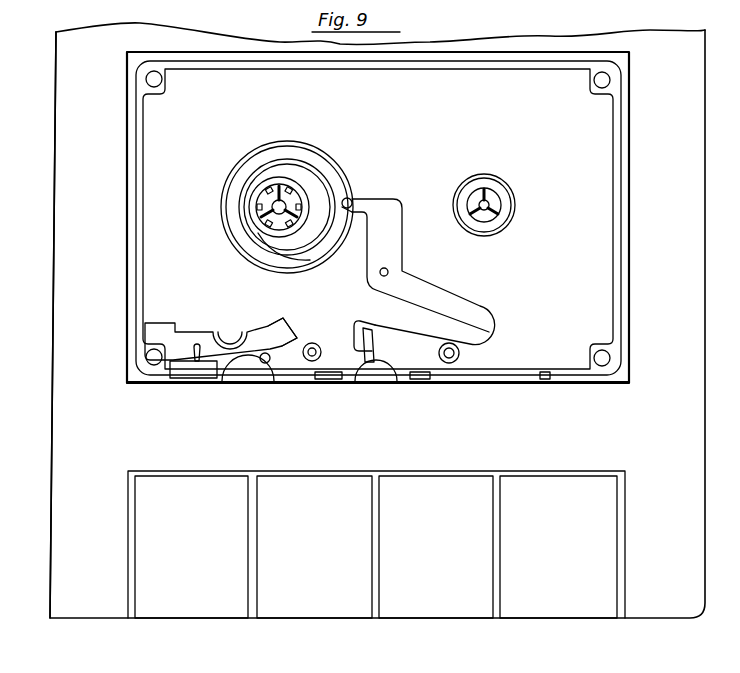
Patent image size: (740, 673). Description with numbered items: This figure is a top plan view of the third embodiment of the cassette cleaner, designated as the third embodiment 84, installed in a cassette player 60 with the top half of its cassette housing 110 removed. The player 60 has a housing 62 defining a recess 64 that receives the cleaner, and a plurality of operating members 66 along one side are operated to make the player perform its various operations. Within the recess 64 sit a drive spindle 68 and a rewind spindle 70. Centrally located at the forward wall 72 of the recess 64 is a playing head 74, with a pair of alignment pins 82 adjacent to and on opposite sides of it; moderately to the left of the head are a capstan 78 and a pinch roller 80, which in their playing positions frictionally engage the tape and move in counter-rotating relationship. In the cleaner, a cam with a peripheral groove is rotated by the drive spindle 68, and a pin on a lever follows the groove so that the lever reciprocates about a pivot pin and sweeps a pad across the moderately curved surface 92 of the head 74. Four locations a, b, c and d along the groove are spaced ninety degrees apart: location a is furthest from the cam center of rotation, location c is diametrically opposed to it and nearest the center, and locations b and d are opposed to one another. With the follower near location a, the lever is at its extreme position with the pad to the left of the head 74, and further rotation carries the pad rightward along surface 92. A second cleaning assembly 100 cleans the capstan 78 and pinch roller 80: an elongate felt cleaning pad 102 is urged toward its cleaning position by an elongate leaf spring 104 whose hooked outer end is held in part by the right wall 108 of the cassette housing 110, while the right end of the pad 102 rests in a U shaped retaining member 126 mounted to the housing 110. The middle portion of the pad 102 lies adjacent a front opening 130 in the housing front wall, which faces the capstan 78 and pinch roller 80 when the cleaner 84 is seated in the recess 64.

The cassette player 60 is at (50, 391).
The housing 62 is at (50, 297).
The recess 64 is at (128, 196).
The operating members 66 is at (265, 605).
The drive spindle 68 is at (265, 197).
The rewind spindle 70 is at (492, 200).
The forward wall 72 is at (472, 384).
The playing head 74 is at (398, 385).
The capstan 78 is at (270, 360).
The pinch roller 80 is at (247, 378).
The alignment pins 82 is at (311, 343).
The third embodiment 84 is at (626, 168).
The head surface 92 is at (386, 367).
The second cleaning assembly 100 is at (207, 385).
The felt cleaning pad 102 is at (254, 329).
The leaf spring 104 is at (207, 326).
The right wall 108 is at (132, 267).
The cassette housing 110 is at (590, 215).
The U shaped retaining member 126 is at (274, 324).
The front opening 130 is at (305, 378).
The location a is at (352, 201).
The location b is at (292, 145).
The location c is at (240, 206).
The location d is at (285, 268).